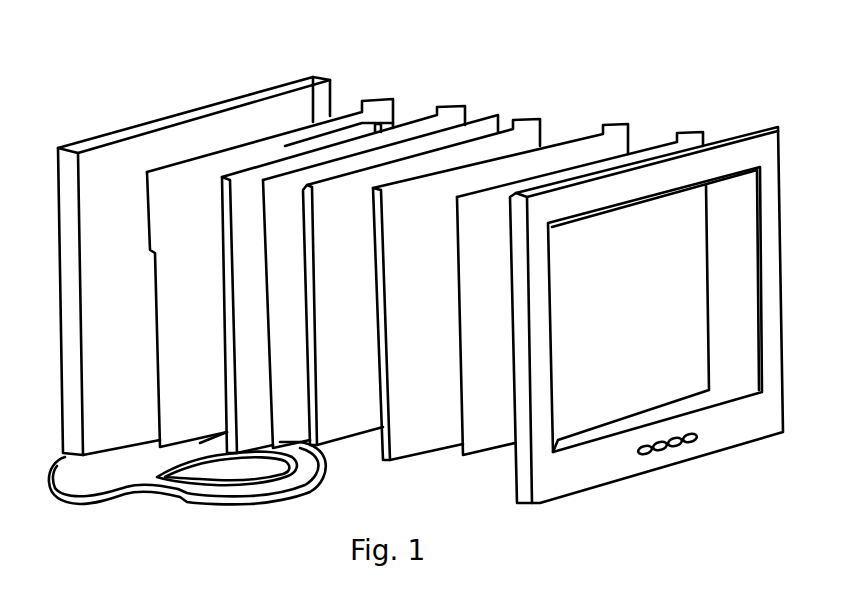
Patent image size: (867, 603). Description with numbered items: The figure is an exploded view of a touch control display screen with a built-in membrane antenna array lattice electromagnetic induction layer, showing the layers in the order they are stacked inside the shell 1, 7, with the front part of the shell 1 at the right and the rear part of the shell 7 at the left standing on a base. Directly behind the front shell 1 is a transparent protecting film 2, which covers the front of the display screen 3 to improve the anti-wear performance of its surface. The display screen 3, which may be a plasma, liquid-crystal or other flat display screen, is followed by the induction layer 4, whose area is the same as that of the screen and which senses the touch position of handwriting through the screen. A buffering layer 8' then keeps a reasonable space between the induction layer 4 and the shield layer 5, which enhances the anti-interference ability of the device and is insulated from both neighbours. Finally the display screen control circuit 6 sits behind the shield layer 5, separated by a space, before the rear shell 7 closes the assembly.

The shell 1 is at (733, 157).
The protecting film 2 is at (677, 148).
The display screen 3 is at (603, 140).
The induction layer 4 is at (517, 143).
The shield layer 5 is at (437, 113).
The display screen control circuit 6 is at (364, 122).
The shell 7 is at (271, 108).
The buffering layer 8' is at (389, 245).